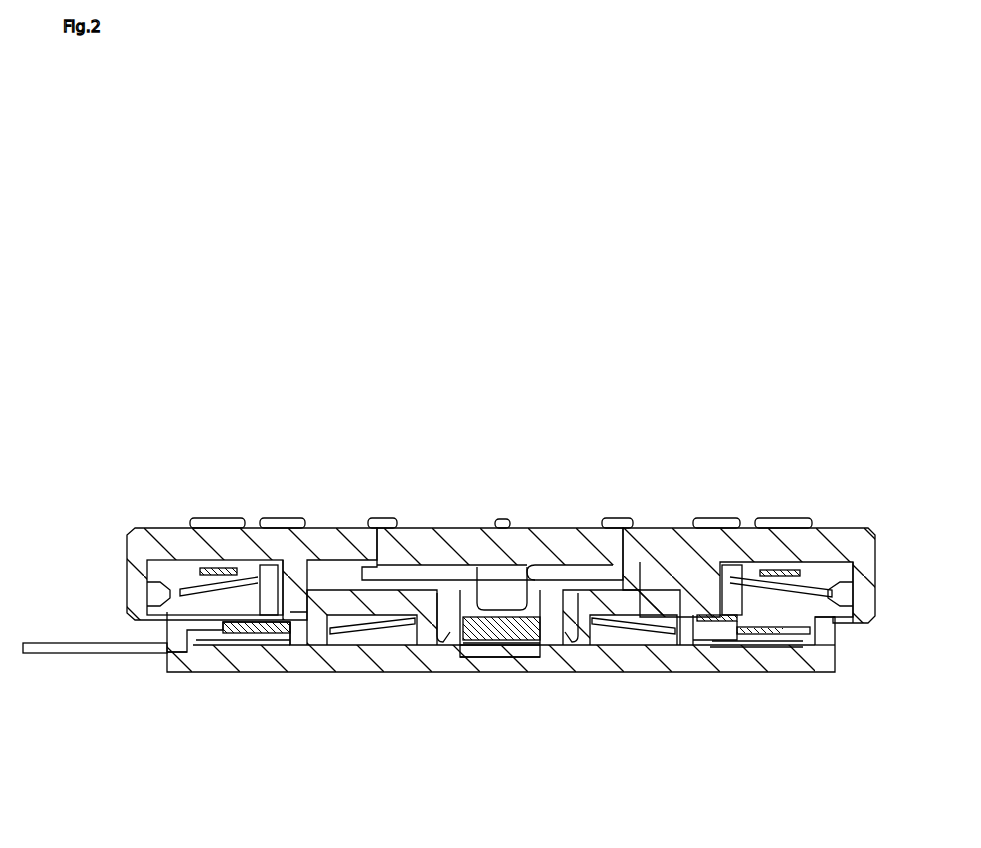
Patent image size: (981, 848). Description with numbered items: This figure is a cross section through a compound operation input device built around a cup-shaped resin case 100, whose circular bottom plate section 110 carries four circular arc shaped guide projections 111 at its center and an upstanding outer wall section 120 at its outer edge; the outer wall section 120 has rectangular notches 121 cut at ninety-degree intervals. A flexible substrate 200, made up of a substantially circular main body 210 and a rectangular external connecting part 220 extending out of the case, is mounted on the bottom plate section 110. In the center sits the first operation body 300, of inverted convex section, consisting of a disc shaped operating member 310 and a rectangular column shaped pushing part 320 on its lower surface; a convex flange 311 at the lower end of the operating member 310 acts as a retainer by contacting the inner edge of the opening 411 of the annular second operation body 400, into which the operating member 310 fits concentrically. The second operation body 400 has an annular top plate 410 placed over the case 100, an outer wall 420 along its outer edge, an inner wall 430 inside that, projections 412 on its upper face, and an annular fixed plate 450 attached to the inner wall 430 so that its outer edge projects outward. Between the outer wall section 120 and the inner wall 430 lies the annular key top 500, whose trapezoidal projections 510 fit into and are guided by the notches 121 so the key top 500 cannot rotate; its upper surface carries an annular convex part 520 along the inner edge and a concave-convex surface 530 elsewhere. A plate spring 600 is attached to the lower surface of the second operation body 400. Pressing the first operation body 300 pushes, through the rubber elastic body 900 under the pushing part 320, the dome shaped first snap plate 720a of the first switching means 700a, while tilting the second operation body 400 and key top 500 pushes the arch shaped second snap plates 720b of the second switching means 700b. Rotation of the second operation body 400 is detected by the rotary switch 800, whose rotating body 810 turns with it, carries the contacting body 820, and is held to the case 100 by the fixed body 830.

The case 100 is at (547, 662).
The bottom plate section 110 is at (635, 663).
The guide projections 111 is at (583, 650).
The outer wall section 120 is at (838, 630).
The notches 121 is at (828, 645).
The flexible substrate 200 is at (117, 692).
The main body 210 is at (187, 683).
The external connecting part 220 is at (143, 650).
The first operation body 300 is at (514, 521).
The operating member 310 is at (559, 543).
The flange 311 is at (645, 572).
The pushing part 320 is at (503, 590).
The second operation body 400 is at (836, 524).
The top plate 410 is at (345, 543).
The opening 411 is at (621, 545).
The housing projection 412 is at (216, 519).
The outer wall 420 is at (863, 581).
The inner wall 430 is at (700, 587).
The fixed plate 450 is at (715, 643).
The key top 500 is at (532, 597).
The projections 510 is at (835, 598).
The convex part 520 is at (295, 622).
The concave-convex surface 530 is at (843, 562).
The plate spring 600 is at (782, 573).
The first switching means 700a is at (488, 650).
The second switching means 700b is at (227, 642).
The first snap plate 720a is at (535, 645).
The second snap plate 720b is at (250, 645).
The rotary switch 800 is at (445, 635).
The rotating body 810 is at (373, 603).
The contacting body 820 is at (334, 632).
The fixed body 830 is at (438, 597).
The elastic body 900 is at (479, 565).